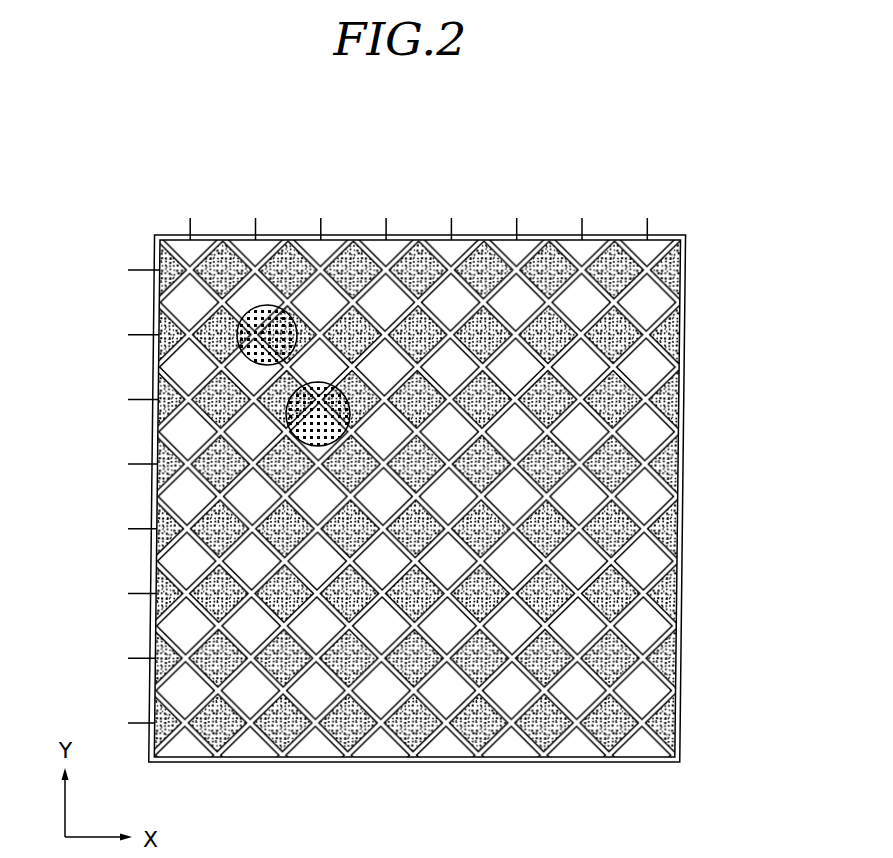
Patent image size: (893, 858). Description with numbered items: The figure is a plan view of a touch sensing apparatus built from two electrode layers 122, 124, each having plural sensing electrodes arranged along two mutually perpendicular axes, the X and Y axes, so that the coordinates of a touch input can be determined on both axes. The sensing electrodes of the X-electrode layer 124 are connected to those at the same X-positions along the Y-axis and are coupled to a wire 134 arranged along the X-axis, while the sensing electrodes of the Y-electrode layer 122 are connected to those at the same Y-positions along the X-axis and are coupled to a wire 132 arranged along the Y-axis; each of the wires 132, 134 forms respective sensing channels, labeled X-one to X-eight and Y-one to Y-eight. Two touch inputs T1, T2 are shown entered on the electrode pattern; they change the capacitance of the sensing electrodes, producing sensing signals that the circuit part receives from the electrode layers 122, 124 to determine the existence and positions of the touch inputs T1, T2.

The Y-electrode layer 122 is at (677, 273).
The X-electrode layer 124 is at (650, 312).
The wire 132 is at (115, 252).
The wire 134 is at (670, 202).
The touch input T1 is at (250, 333).
The touch input T2 is at (287, 398).